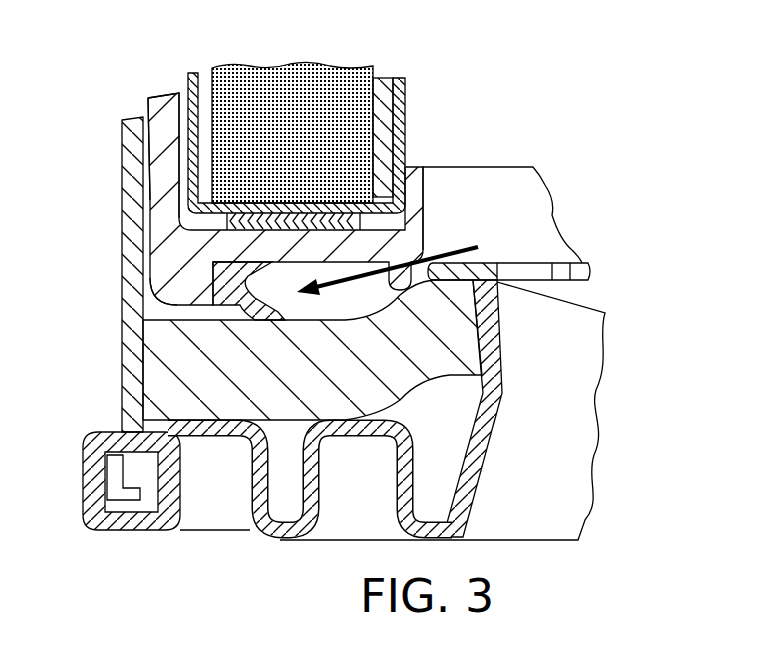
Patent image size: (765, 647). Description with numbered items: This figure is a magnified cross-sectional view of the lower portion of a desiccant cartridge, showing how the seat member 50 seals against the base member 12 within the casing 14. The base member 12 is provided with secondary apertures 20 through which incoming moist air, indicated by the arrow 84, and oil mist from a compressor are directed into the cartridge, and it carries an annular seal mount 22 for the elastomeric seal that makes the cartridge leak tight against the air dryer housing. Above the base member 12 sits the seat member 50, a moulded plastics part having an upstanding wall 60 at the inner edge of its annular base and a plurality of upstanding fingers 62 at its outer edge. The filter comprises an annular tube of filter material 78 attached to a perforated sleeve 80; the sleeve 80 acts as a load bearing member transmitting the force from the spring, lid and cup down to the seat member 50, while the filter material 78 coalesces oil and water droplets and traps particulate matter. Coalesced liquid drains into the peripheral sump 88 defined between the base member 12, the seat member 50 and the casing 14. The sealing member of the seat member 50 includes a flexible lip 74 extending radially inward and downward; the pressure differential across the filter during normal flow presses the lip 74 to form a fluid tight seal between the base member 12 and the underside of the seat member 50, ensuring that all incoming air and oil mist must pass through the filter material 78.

The base member 12 is at (150, 363).
The casing 14 is at (122, 152).
The secondary apertures 20 is at (598, 363).
The annular seal mount 22 is at (282, 538).
The seat member 50 is at (160, 267).
The upstanding wall 60 is at (425, 190).
The upstanding fingers 62 is at (165, 107).
The flexible lip 74 is at (280, 316).
The filter material 78 is at (300, 75).
The perforated sleeve 80 is at (385, 80).
The arrow 84 is at (470, 247).
The peripheral sump 88 is at (150, 307).